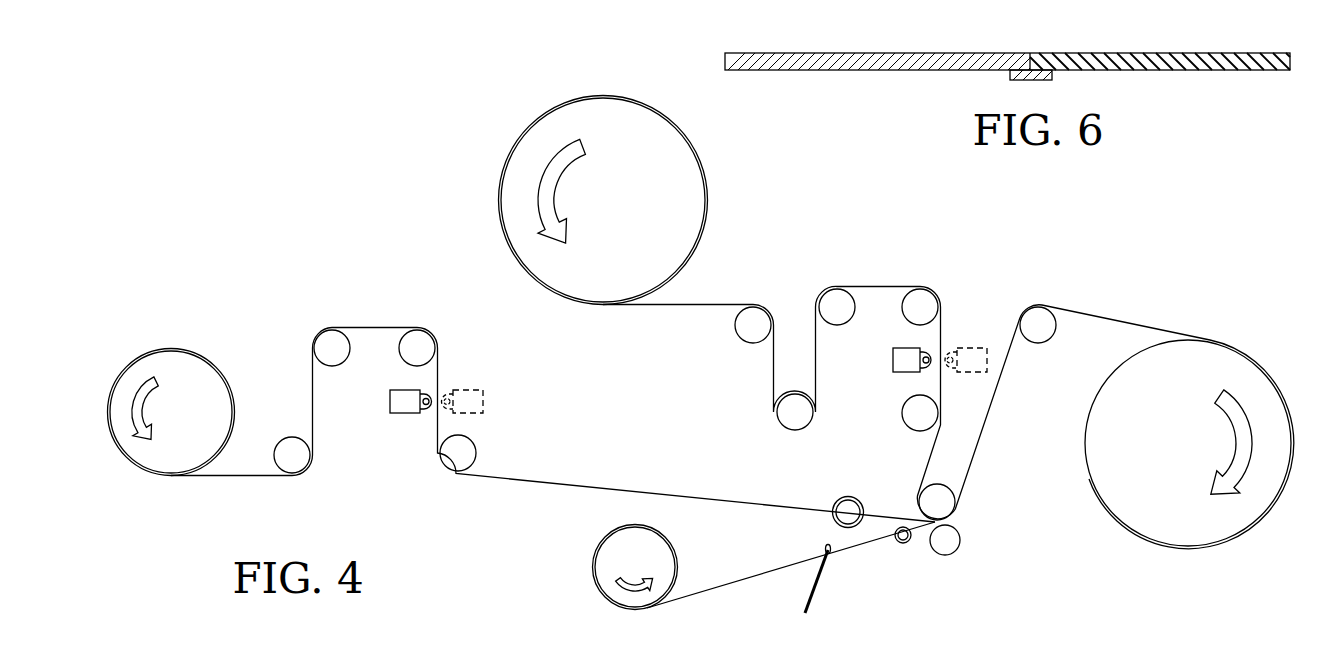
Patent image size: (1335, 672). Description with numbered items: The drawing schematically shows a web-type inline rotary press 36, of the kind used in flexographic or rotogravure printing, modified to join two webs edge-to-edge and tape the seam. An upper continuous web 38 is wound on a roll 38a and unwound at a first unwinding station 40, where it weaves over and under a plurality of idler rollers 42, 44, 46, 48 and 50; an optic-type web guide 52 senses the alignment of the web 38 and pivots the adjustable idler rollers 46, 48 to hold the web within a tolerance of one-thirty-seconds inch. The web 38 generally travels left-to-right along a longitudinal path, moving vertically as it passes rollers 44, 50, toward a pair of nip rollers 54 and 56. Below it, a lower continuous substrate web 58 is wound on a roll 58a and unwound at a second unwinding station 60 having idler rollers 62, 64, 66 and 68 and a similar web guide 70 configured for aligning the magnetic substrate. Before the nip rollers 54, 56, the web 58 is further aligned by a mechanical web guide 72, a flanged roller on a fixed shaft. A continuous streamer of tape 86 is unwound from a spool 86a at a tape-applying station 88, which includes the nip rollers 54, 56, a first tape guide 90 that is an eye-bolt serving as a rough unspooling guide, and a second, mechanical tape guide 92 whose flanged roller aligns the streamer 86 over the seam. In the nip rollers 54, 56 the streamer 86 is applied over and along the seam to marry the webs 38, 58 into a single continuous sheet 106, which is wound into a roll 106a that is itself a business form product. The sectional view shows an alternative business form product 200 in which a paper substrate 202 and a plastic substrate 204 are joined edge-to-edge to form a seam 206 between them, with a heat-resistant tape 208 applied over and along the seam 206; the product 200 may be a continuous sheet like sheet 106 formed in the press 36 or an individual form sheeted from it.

In FIG. 4, the web-type inline rotary press 36 is at (502, 523).
In FIG. 4, the upper continuous web 38 is at (708, 303).
In FIG. 4, the roll 38a is at (667, 148).
In FIG. 4, the first unwinding station 40 is at (873, 271).
In FIG. 4, the idler roller 42 is at (745, 337).
In FIG. 4, the idler roller 44 is at (788, 420).
In FIG. 4, the adjustable idler roller 46 is at (830, 300).
In FIG. 4, the adjustable idler roller 48 is at (925, 298).
In FIG. 4, the idler roller 50 is at (917, 420).
In FIG. 4, the web guide 52 is at (902, 365).
In FIG. 4, the nip roller 54 is at (947, 500).
In FIG. 4, the nip roller 56 is at (948, 542).
In FIG. 4, the lower continuous substrate web 58 is at (228, 472).
In FIG. 4, the roll 58a is at (207, 380).
In FIG. 4, the second unwinding station 60 is at (374, 312).
In FIG. 4, the idler roller 62 is at (300, 460).
In FIG. 4, the idler roller 64 is at (325, 340).
In FIG. 4, the idler roller 66 is at (422, 340).
In FIG. 4, the idler roller 68 is at (452, 460).
In FIG. 4, the web guide 70 is at (402, 407).
In FIG. 4, the mechanical web guide 72 is at (832, 518).
In FIG. 4, the streamer of tape 86 is at (747, 577).
In FIG. 4, the spool 86a is at (613, 552).
In FIG. 4, the tape-applying station 88 is at (857, 557).
In FIG. 4, the first tape guide 90 is at (812, 587).
In FIG. 4, the second tape guide 92 is at (903, 546).
In FIG. 4, the single continuous sheet 106 is at (988, 420).
In FIG. 4, the roll 106a is at (1203, 362).
In FIG. 6, the business form product 200 is at (1112, 101).
In FIG. 6, the substrate 202 is at (860, 70).
In FIG. 6, the substrate 204 is at (1212, 66).
In FIG. 6, the seam 206 is at (1028, 51).
In FIG. 6, the heat-resistant tape 208 is at (1033, 80).